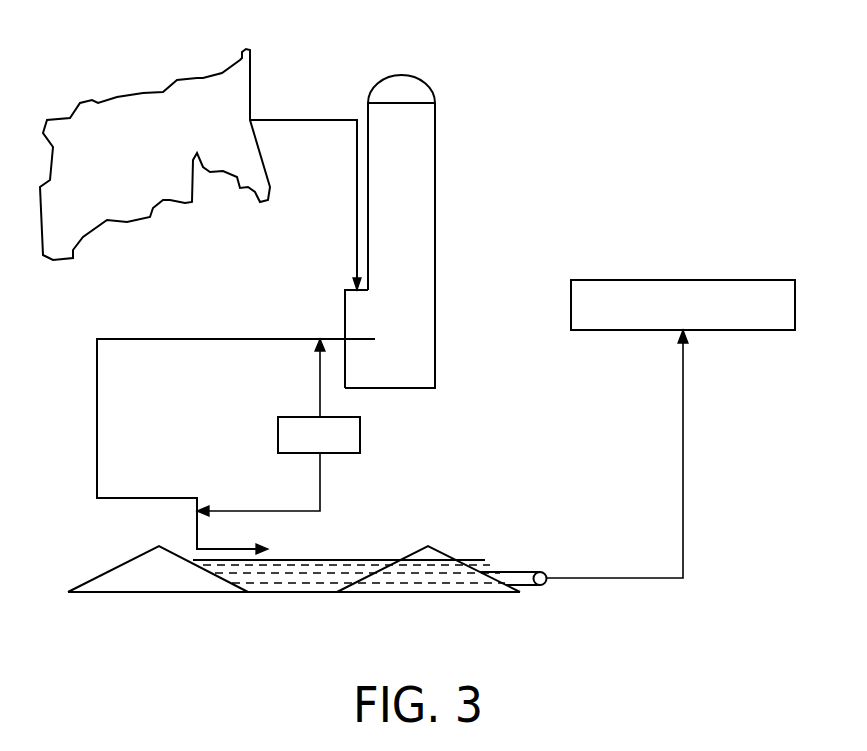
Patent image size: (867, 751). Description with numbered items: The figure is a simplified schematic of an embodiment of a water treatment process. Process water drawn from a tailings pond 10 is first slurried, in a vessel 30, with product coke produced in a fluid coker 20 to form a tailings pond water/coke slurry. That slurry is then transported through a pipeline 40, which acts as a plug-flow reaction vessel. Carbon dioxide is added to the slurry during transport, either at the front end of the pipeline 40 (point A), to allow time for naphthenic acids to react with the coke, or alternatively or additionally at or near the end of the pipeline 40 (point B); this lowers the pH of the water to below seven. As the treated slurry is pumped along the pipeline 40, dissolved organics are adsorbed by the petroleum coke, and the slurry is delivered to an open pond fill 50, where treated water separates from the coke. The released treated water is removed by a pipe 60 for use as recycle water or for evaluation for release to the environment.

The tailings pond 10 is at (192, 75).
The fluid coker 20 is at (435, 163).
The vessel 30 is at (345, 305).
The pipeline 40 is at (153, 338).
The open pond fill 50 is at (295, 592).
The pipe 60 is at (517, 572).